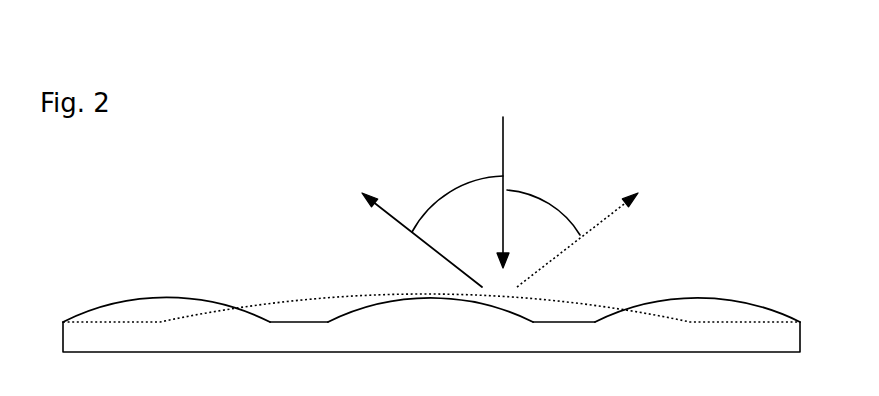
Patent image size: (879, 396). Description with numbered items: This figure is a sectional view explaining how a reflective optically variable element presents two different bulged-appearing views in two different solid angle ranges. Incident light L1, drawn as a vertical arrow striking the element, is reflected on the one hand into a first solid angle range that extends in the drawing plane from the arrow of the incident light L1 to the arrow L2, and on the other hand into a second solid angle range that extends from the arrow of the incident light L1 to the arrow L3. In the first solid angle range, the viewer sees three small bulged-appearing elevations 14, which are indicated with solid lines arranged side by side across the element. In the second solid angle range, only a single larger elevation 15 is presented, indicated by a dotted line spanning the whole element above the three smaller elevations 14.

The bulged-appearing elevations 14 is at (158, 297).
The larger elevation 15 is at (578, 298).
The incident light L1 is at (502, 137).
The arrow L2 is at (386, 212).
The arrow L3 is at (600, 222).